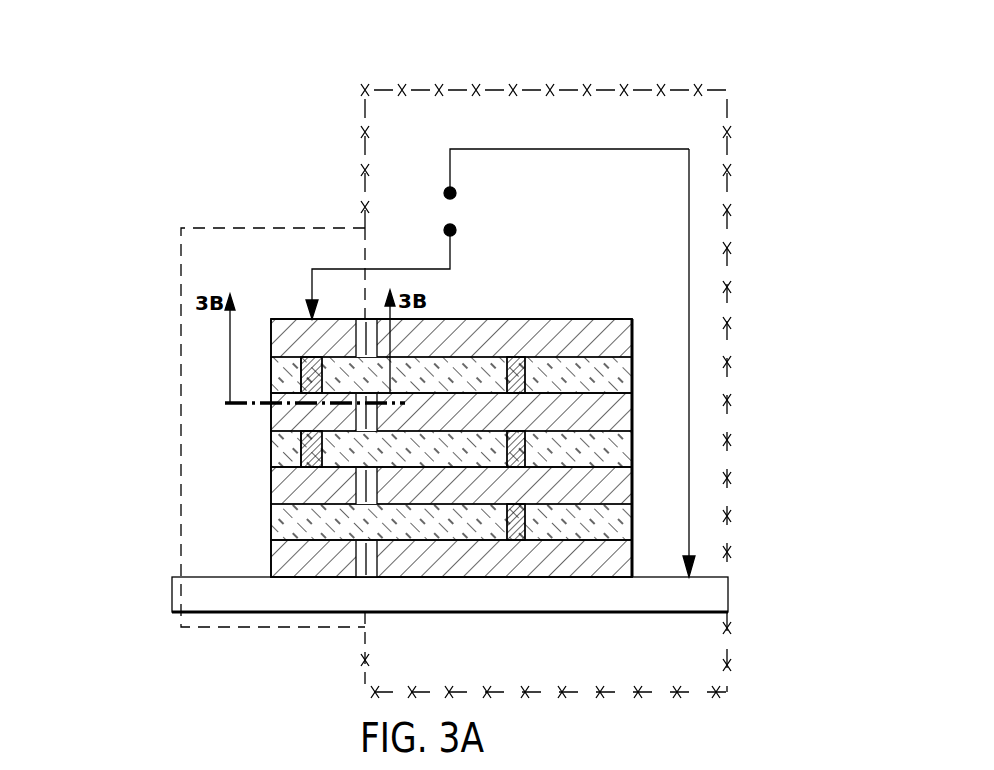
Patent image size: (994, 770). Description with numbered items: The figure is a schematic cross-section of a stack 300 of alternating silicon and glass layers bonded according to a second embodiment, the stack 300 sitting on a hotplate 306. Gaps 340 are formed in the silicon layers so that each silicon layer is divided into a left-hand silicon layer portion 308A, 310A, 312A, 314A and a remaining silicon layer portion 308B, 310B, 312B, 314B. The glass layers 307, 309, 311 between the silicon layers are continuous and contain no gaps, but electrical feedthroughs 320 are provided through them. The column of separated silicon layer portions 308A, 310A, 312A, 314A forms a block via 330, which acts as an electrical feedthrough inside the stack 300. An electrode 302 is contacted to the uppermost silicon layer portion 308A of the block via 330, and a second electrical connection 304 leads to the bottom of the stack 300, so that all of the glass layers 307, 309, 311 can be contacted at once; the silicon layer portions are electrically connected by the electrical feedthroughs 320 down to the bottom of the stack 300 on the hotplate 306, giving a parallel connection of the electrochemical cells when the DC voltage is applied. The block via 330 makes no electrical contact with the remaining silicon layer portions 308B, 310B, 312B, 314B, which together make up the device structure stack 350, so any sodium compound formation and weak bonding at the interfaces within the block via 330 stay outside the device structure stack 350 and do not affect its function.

The stack 300 is at (560, 258).
The electrode 302 is at (312, 318).
The second electrical lead 304 is at (692, 537).
The hotplate 306 is at (730, 588).
The glass layer 307 is at (632, 373).
The silicon layer portion 308A is at (271, 340).
The silicon layer portion 308B is at (632, 337).
The glass layer 309 is at (632, 448).
The silicon layer portion 310A is at (271, 422).
The silicon layer portion 310B is at (632, 410).
The glass layer 311 is at (632, 520).
The silicon layer portion 312A is at (271, 488).
The silicon layer portion 312B is at (632, 485).
The silicon layer portion 314A is at (271, 558).
The silicon layer portion 314B is at (632, 558).
The electrical feedthroughs 320 is at (271, 378).
The block via 330 is at (225, 228).
The gaps 340 is at (378, 488).
The device structure stack 350 is at (530, 88).